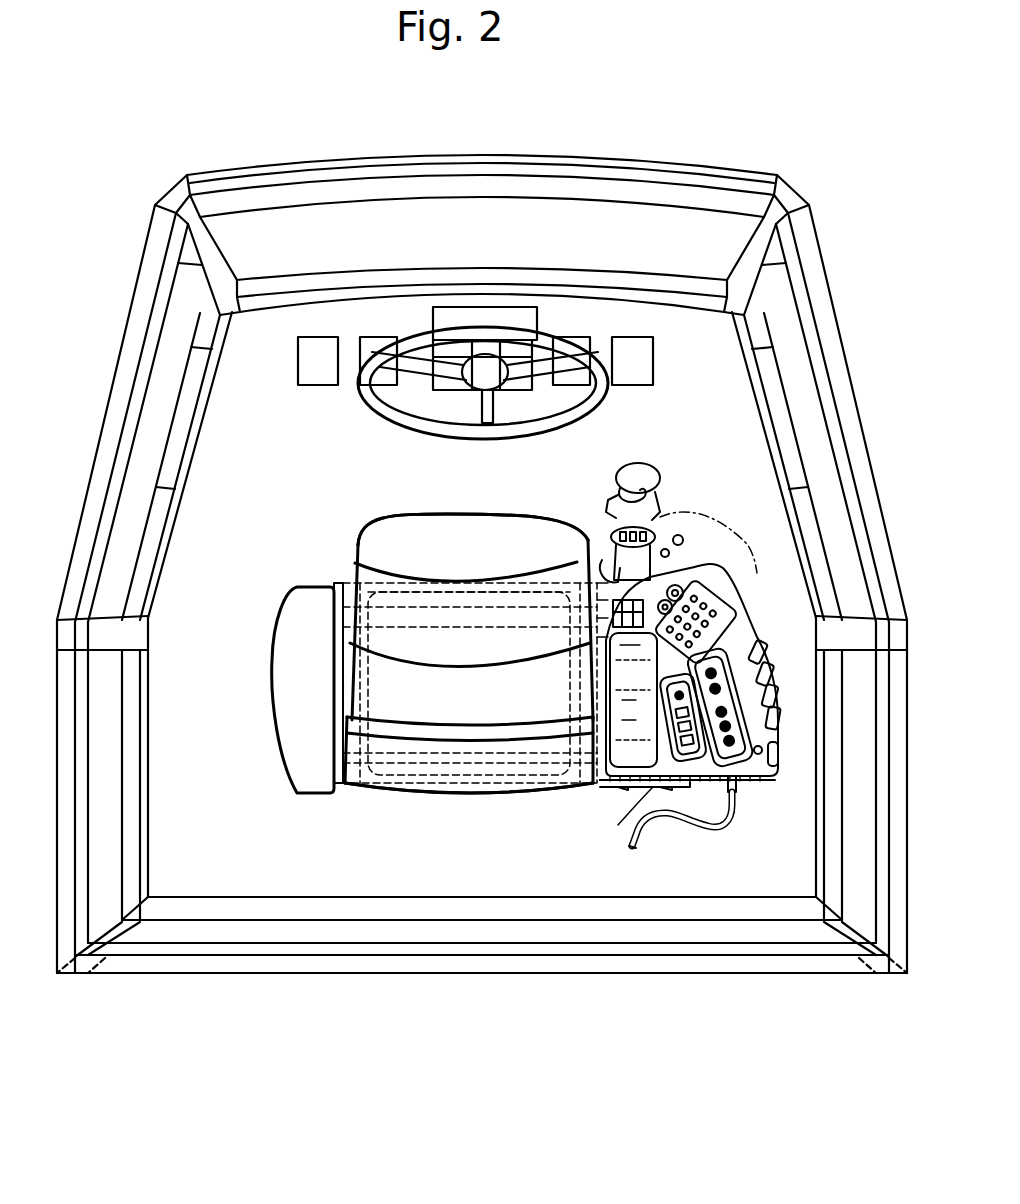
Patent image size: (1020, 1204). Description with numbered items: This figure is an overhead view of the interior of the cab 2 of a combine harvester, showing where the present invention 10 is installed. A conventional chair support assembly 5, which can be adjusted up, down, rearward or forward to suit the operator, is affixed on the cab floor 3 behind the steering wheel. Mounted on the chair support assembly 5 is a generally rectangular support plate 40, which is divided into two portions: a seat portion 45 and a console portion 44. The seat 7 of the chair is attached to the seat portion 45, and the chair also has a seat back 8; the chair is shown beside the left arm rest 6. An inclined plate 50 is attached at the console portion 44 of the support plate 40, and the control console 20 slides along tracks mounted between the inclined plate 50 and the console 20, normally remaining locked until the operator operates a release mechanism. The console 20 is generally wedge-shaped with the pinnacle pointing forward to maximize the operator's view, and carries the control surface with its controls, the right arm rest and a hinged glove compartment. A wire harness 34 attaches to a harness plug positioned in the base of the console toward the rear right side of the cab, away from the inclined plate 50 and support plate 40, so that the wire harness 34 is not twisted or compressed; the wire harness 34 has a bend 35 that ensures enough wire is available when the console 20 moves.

The cab 2 is at (617, 160).
The cab floor 3 is at (262, 429).
The chair support assembly 5 is at (340, 657).
The left armrest 6 is at (287, 694).
The seat 7 is at (447, 543).
The seat back 8 is at (410, 770).
The present invention 10 is at (705, 475).
The control console 20 is at (736, 570).
The wire harness 34 is at (735, 790).
The bend 35 is at (715, 829).
The support plate 40 is at (342, 583).
The console portion 44 is at (655, 790).
The seat portion 45 is at (367, 590).
The inclined plate 50 is at (607, 787).